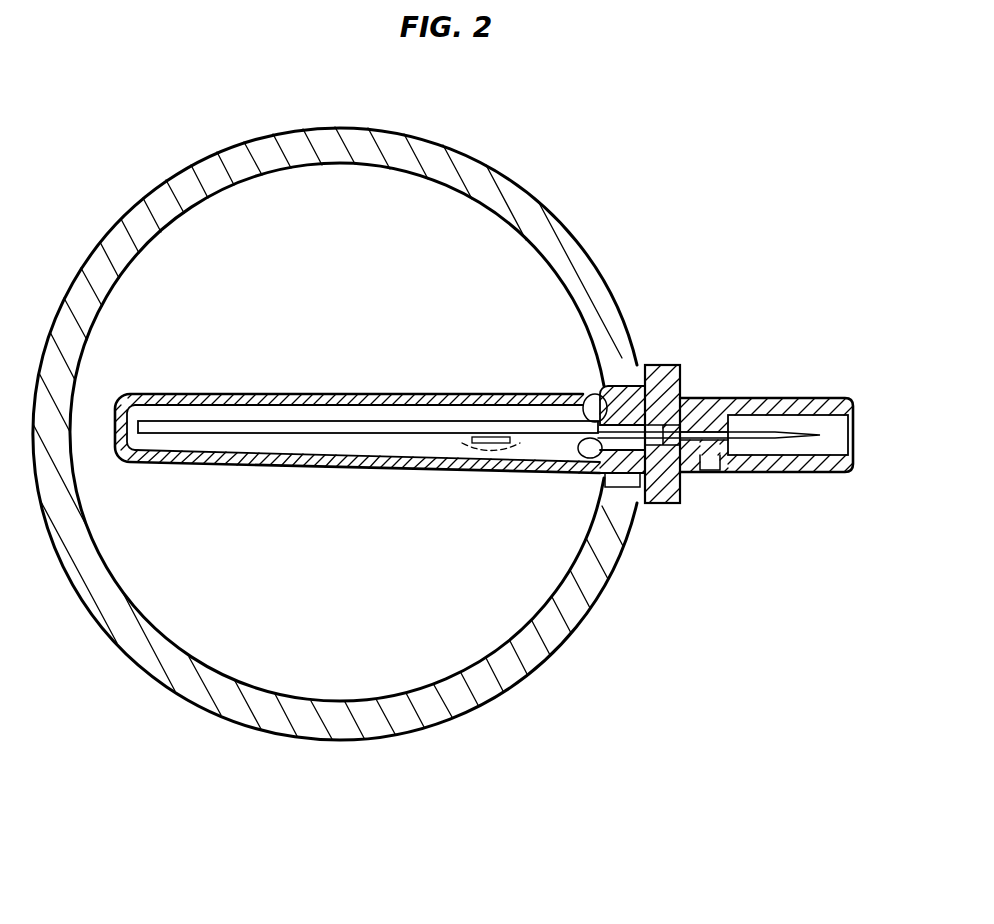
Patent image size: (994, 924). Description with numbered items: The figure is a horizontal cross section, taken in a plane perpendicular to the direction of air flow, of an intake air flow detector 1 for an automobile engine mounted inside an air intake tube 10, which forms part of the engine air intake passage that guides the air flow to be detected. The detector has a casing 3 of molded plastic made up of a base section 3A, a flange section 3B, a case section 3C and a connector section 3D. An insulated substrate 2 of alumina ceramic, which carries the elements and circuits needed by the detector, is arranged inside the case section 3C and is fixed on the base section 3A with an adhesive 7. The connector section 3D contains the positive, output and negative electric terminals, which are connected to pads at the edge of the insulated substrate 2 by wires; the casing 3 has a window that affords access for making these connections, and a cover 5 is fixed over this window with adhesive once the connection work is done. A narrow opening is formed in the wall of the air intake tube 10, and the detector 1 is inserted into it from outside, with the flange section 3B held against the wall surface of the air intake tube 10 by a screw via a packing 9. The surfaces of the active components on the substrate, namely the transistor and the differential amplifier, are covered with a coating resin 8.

The intake air flow detector 1 is at (337, 371).
The insulated substrate 2 is at (244, 420).
The casing 3 is at (467, 388).
The base section 3A is at (605, 384).
The flange section 3B is at (682, 378).
The case section 3C is at (294, 466).
The connector section 3D is at (787, 397).
The cover 5 is at (706, 474).
The adhesive 7 is at (587, 390).
The coating resin 8 is at (458, 457).
The packing 9 is at (640, 490).
The air intake tube 10 is at (353, 745).